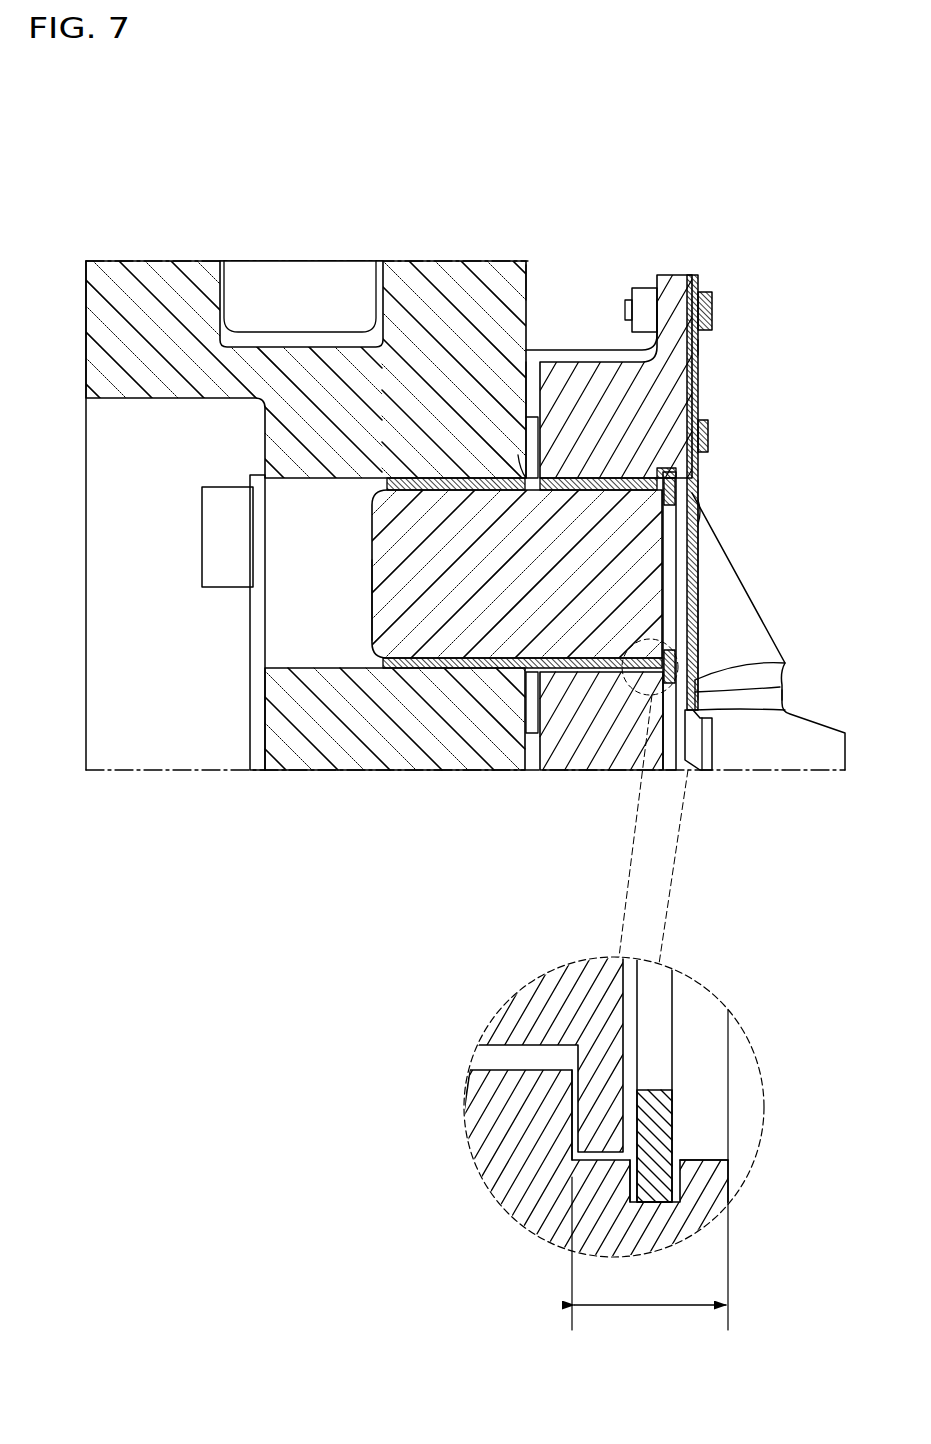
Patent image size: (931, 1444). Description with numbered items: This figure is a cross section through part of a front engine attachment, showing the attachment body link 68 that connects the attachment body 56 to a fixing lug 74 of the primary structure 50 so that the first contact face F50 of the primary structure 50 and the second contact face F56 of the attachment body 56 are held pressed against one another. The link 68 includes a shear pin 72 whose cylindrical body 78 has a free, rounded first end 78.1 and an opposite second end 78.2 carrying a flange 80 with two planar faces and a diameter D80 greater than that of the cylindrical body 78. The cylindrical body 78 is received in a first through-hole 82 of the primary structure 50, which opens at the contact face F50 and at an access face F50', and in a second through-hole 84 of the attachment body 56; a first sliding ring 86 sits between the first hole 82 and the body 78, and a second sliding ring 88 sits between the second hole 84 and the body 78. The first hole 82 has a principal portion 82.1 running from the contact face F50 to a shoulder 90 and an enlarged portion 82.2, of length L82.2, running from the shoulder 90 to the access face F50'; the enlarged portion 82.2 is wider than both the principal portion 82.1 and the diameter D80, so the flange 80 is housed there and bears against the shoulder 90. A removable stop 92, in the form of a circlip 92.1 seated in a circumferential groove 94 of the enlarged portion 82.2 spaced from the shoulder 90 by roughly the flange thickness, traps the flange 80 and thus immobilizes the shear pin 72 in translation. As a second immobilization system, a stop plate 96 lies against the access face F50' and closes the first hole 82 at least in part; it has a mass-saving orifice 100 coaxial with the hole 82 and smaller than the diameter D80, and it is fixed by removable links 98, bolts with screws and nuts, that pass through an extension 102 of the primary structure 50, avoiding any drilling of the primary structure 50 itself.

The primary structure 50 is at (740, 574).
The attachment body 56 is at (165, 312).
The attachment body link 68 is at (586, 248).
The shear pin 72 is at (577, 614).
The fixing lug 74 is at (606, 414).
The cylindrical body 78 is at (482, 692).
The first end 78.1 is at (368, 600).
The second end 78.2 is at (788, 684).
The flange 80 is at (700, 409).
The first through-hole 82 is at (540, 705).
The principal portion 82.1 is at (525, 1072).
The enlarged portion 82.2 is at (693, 1136).
The second through-hole 84 is at (428, 648).
The first sliding ring 86 is at (566, 472).
The second sliding ring 88 is at (418, 476).
The shoulder 90 is at (597, 1195).
The removable stop 92 is at (665, 702).
The circlip 92.1 is at (662, 1110).
The groove 94 is at (690, 1250).
The stop plate 96 is at (701, 480).
The removable link 98 is at (724, 298).
The orifice 100 is at (700, 513).
The extension 102 is at (694, 276).
The diameter of the flange D80 is at (517, 562).
The length of second sleeve portion L82.2 is at (650, 1179).
The first contact face F50 is at (501, 313).
The access face F50' is at (769, 683).
The second contact face F56 is at (538, 276).